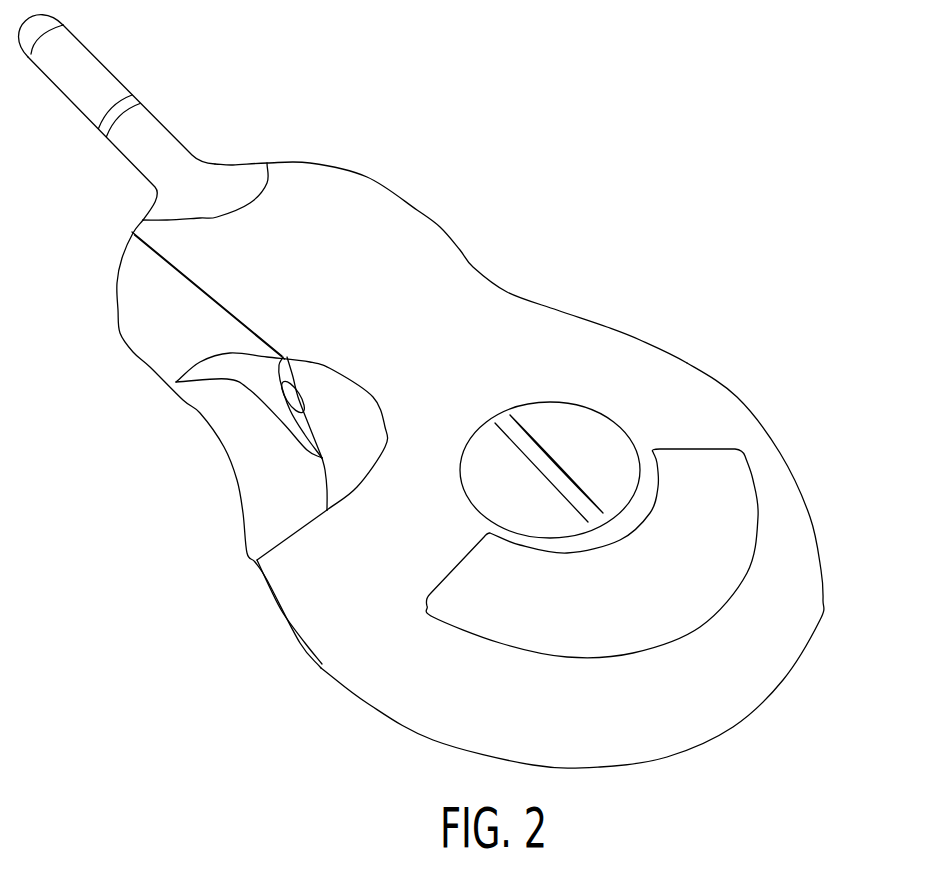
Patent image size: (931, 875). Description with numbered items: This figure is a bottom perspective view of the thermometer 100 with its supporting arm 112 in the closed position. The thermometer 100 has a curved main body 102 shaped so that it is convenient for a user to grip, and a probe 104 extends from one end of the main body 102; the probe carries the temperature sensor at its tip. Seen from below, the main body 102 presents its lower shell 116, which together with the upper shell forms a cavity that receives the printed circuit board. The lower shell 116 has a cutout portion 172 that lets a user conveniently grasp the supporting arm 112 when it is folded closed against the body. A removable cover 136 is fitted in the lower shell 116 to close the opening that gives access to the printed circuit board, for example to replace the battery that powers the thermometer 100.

The thermometer 100 is at (594, 248).
The main body 102 is at (507, 290).
The probe 104 is at (93, 67).
The supporting arm 112 is at (117, 283).
The lower shell 116 is at (737, 397).
The removable cover 136 is at (568, 428).
The cutout portion 172 is at (353, 458).